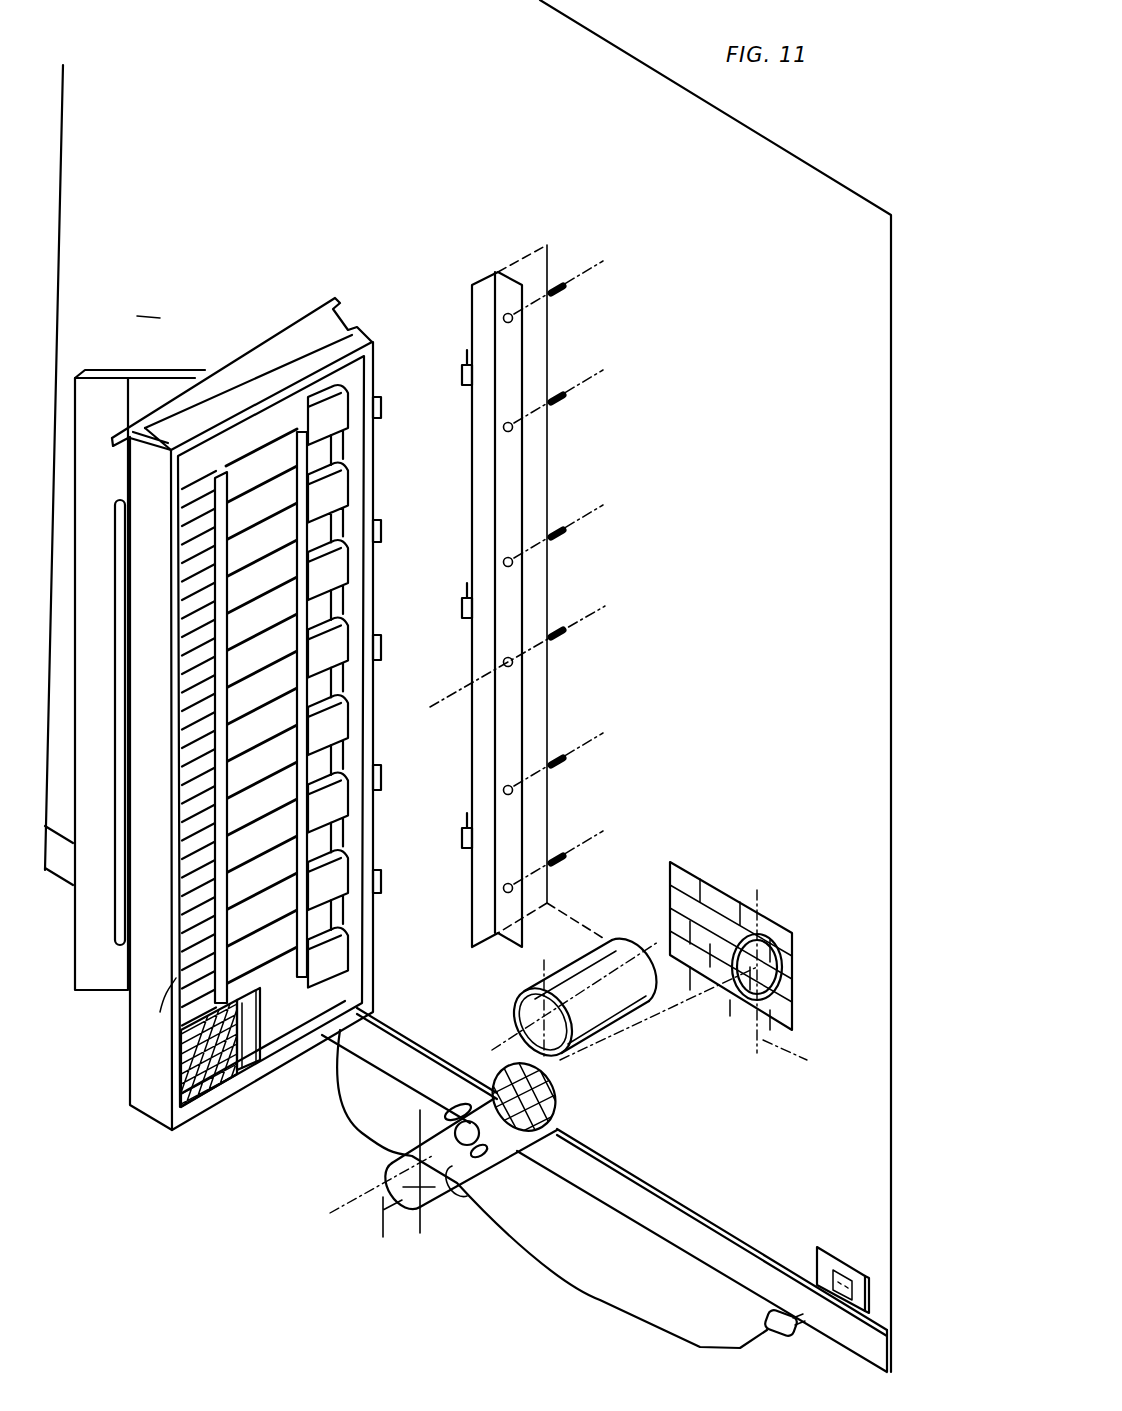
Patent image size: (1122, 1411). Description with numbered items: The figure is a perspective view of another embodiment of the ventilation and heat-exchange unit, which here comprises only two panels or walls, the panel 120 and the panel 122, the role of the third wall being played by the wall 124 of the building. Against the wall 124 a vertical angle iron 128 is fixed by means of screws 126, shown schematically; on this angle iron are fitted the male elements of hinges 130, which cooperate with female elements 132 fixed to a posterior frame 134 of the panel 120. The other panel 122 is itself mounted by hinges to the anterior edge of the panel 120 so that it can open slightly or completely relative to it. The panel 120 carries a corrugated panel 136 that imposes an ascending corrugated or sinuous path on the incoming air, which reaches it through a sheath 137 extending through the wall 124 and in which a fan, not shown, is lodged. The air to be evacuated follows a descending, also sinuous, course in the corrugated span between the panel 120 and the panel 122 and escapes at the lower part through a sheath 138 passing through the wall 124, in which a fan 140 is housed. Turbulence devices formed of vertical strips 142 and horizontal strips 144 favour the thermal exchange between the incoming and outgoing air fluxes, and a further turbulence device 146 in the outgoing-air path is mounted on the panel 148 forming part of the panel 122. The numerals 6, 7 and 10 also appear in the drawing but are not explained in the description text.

The duct end section 6 is at (467, 1185).
The duct screen flange 7 is at (552, 1081).
The heating element block 10 is at (335, 840).
The panel 120 is at (315, 296).
The panel 122 is at (120, 357).
The wall of the building 124 is at (812, 228).
The screws 126 is at (578, 284).
The vertical angle iron 128 is at (487, 264).
The male elements of hinges 130 is at (462, 375).
The female elements of hinges 132 is at (390, 392).
The posterior frame 134 is at (373, 360).
The corrugated panel 136 is at (340, 720).
The sheath 137 is at (590, 968).
The sheath 138 is at (510, 1157).
The fan 140 is at (460, 1120).
The vertical strips 142 is at (337, 762).
The horizontal strips 144 is at (273, 903).
The turbulence device 146 is at (117, 592).
The panel 148 is at (93, 420).